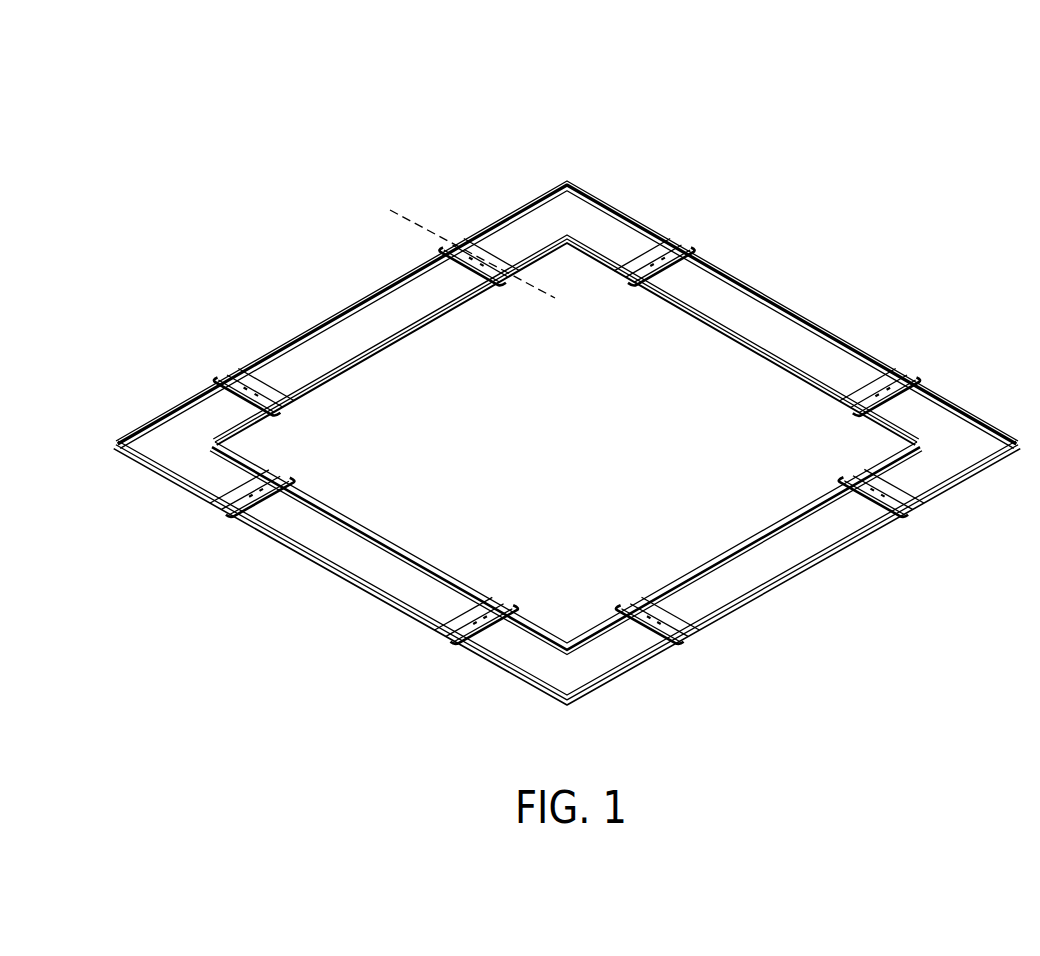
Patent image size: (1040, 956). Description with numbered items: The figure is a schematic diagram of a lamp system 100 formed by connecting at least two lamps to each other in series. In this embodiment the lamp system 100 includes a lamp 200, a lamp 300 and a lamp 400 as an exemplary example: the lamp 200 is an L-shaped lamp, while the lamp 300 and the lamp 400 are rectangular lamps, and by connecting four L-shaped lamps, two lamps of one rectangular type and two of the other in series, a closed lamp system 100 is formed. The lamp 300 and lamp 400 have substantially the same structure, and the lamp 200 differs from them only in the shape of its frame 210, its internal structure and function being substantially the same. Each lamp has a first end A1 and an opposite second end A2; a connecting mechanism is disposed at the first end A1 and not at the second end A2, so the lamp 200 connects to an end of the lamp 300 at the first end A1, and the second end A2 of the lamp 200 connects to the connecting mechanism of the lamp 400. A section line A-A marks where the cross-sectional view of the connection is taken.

The lamp system 100 is at (87, 172).
The lamp 200 is at (515, 168).
The frame 210 is at (593, 189).
The lamp 300 is at (313, 278).
The lamp 400 is at (735, 240).
The first end A1 is at (451, 206).
The second end A2 is at (689, 213).
The line A- A is at (481, 250).